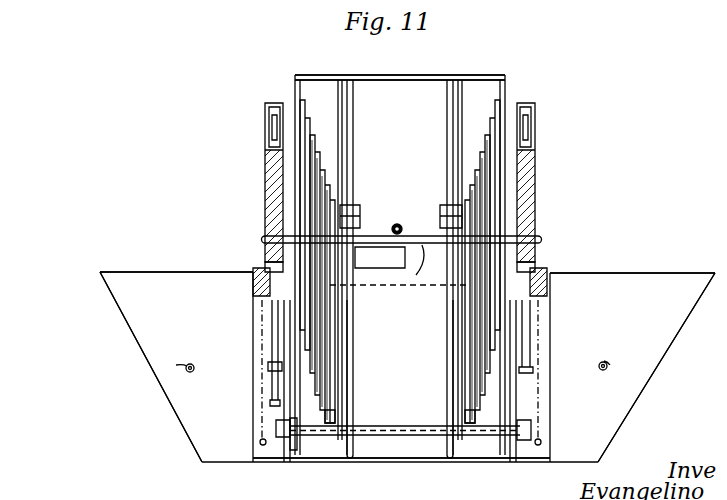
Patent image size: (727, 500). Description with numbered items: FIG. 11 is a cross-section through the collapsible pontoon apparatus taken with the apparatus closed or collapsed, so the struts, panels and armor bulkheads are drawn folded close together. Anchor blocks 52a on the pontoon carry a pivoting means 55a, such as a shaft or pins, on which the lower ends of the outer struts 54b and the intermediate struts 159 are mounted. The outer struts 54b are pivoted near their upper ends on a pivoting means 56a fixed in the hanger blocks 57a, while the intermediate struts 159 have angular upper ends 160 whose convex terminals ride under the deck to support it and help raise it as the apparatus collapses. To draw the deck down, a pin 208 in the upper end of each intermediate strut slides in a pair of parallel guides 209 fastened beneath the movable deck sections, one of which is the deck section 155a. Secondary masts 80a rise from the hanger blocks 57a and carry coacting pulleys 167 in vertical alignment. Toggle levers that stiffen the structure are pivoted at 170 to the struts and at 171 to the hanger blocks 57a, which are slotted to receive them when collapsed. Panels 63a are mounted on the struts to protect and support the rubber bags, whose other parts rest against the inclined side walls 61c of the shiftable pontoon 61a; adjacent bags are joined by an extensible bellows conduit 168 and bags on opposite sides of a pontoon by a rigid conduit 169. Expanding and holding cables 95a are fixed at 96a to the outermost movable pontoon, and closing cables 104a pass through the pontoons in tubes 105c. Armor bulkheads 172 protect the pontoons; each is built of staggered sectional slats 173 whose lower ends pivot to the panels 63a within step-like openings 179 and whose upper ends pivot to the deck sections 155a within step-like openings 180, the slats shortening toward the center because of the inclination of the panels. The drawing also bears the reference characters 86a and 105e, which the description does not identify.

The movable deck section 155a is at (404, 76).
The openings of step-like formation 180 is at (308, 115).
The coacting pulleys 167 is at (272, 128).
The sectional slats 173 is at (311, 150).
The parallel guides 209 is at (345, 140).
The secondary masts 80a is at (268, 178).
The armor bulkheads 172 is at (293, 191).
The angular upper ends 160 is at (352, 208).
The pin 208 is at (352, 214).
The toggle lever pivot on struts 170 is at (268, 264).
The extensible bellows conduit 168 is at (402, 256).
The pivoting means 56a is at (416, 262).
The hanger blocks 57a is at (255, 280).
The expanding and holding cables 95a is at (262, 318).
The rigid conduit 169 is at (275, 337).
The inclined side walls 61c is at (143, 352).
The tubes 105c is at (189, 364).
The closing cables 104a is at (186, 370).
The shiftable supporting pontoon 61a is at (176, 412).
The toggle lever pivot on hanger blocks 171 is at (270, 366).
The outer struts 54b is at (284, 395).
The knob 86a is at (260, 442).
The anchor blocks 52a is at (285, 460).
The intermediate struts 159 is at (345, 360).
The openings of step-like formation 179 is at (332, 420).
The pivoting means 55a is at (408, 430).
The pivot 105e is at (605, 362).
The panels 63a is at (495, 420).
The cable fixing point 96a is at (542, 441).